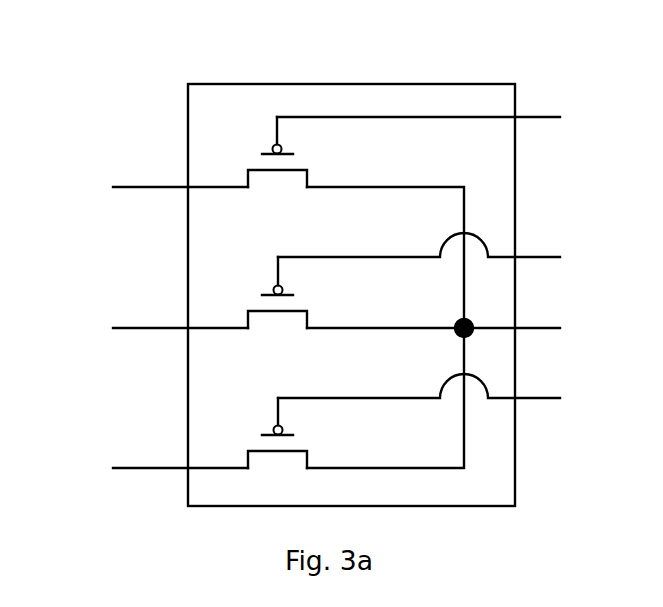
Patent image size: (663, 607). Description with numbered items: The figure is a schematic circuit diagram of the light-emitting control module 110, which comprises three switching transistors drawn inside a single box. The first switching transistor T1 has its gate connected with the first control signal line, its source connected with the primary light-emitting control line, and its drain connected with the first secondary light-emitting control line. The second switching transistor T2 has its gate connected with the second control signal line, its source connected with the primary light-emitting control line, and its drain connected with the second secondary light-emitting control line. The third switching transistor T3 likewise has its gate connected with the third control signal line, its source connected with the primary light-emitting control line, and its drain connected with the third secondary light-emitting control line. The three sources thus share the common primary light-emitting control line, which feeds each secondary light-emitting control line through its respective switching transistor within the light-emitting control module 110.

The light-emitting control module 110 is at (328, 265).
The first switching transistor T1 is at (277, 158).
The second switching transistor T2 is at (277, 298).
The third switching transistor T3 is at (277, 439).